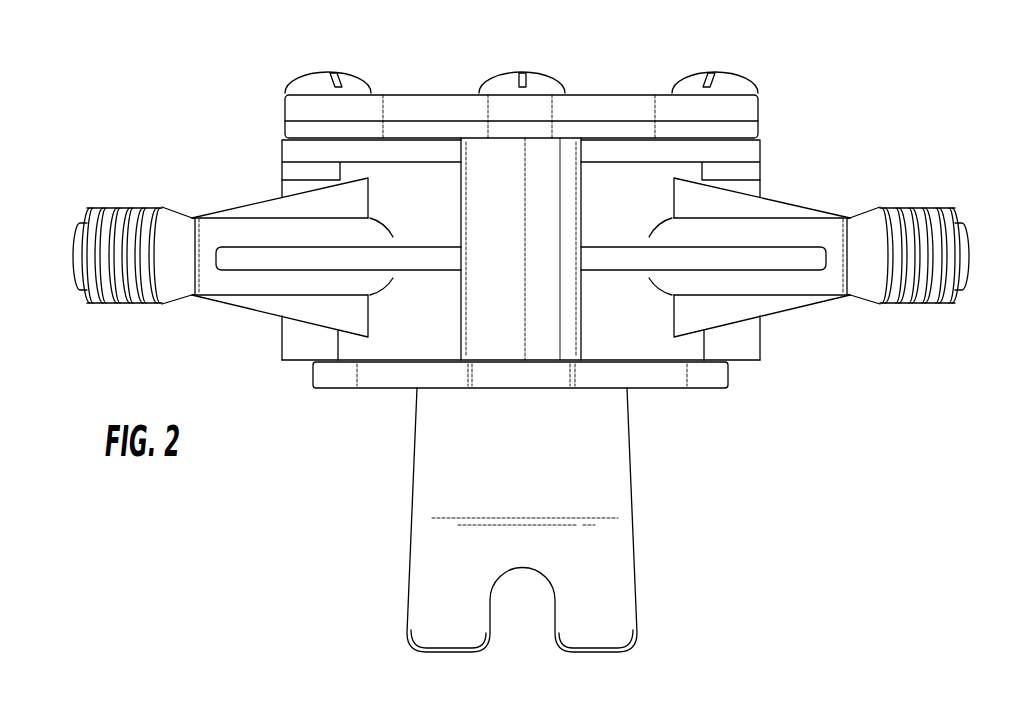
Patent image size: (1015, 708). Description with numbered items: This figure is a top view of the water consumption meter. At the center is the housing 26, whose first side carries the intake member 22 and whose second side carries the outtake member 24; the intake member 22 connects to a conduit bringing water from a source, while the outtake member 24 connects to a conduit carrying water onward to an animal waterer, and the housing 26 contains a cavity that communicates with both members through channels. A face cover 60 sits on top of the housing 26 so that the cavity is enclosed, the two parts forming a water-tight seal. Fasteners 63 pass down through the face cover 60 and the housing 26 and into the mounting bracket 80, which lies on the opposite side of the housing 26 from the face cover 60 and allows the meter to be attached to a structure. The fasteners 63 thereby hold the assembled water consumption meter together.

The intake member 22 is at (122, 221).
The outtake member 24 is at (960, 257).
The housing 26 is at (397, 330).
The face cover 60 is at (283, 151).
The fasteners 63 is at (352, 82).
The mounting bracket 80 is at (433, 612).